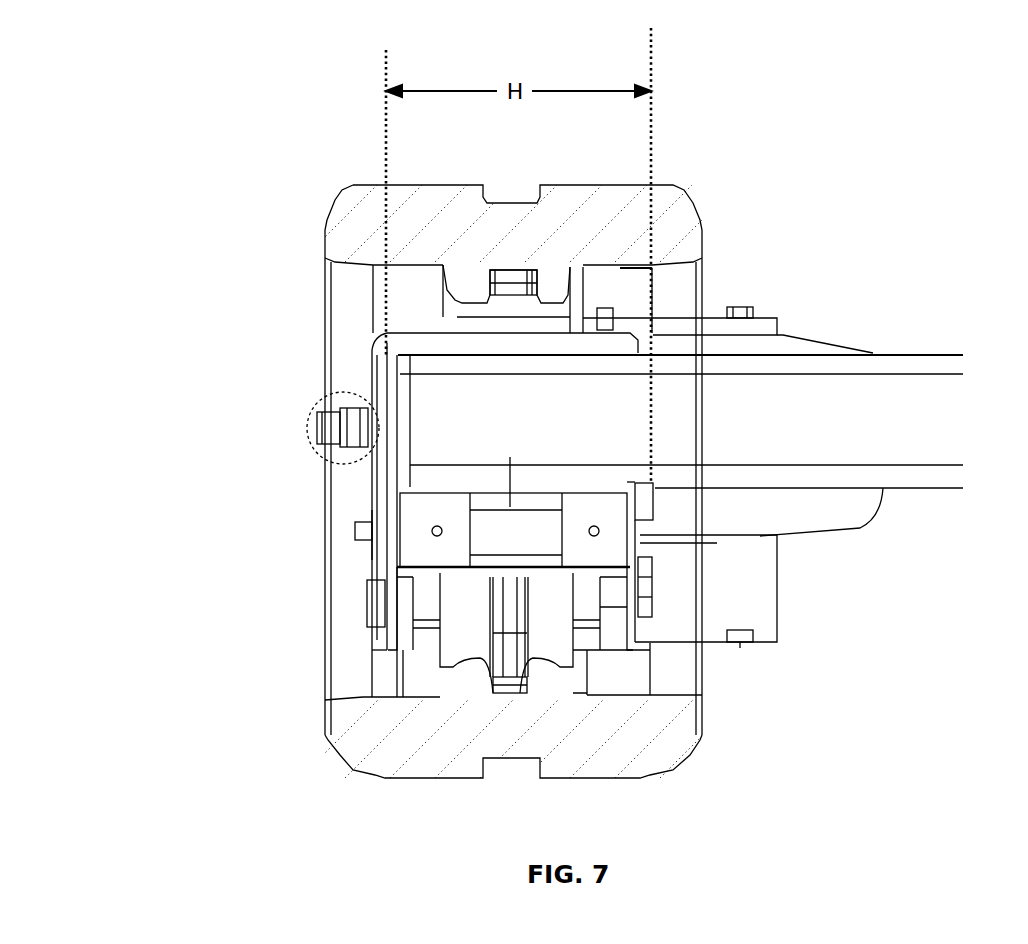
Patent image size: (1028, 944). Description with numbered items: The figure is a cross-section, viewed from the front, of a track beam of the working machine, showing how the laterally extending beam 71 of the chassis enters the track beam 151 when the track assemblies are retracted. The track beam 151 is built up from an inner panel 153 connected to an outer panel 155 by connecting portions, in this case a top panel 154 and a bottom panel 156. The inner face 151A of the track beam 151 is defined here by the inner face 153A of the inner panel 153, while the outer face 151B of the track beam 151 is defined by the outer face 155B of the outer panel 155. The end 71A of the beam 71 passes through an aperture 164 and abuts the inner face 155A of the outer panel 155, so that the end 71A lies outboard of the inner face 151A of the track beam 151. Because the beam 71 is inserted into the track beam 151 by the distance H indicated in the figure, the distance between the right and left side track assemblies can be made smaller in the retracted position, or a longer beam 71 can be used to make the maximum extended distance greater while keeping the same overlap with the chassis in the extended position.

The beam 71 is at (913, 427).
The end of beam 71A is at (400, 394).
The track beam 151 is at (528, 337).
The inner face of track beam 151A is at (653, 498).
The outer face of track beam 151B is at (370, 370).
The inner panel 153 is at (653, 505).
The inner face of inner panel 153A is at (655, 515).
The top panel 154 is at (470, 352).
The outer panel 155 is at (400, 480).
The inner face of outer panel 155A is at (450, 447).
The outer face of outer panel 155B is at (425, 445).
The bottom panel 156 is at (548, 578).
The aperture 164 is at (630, 347).